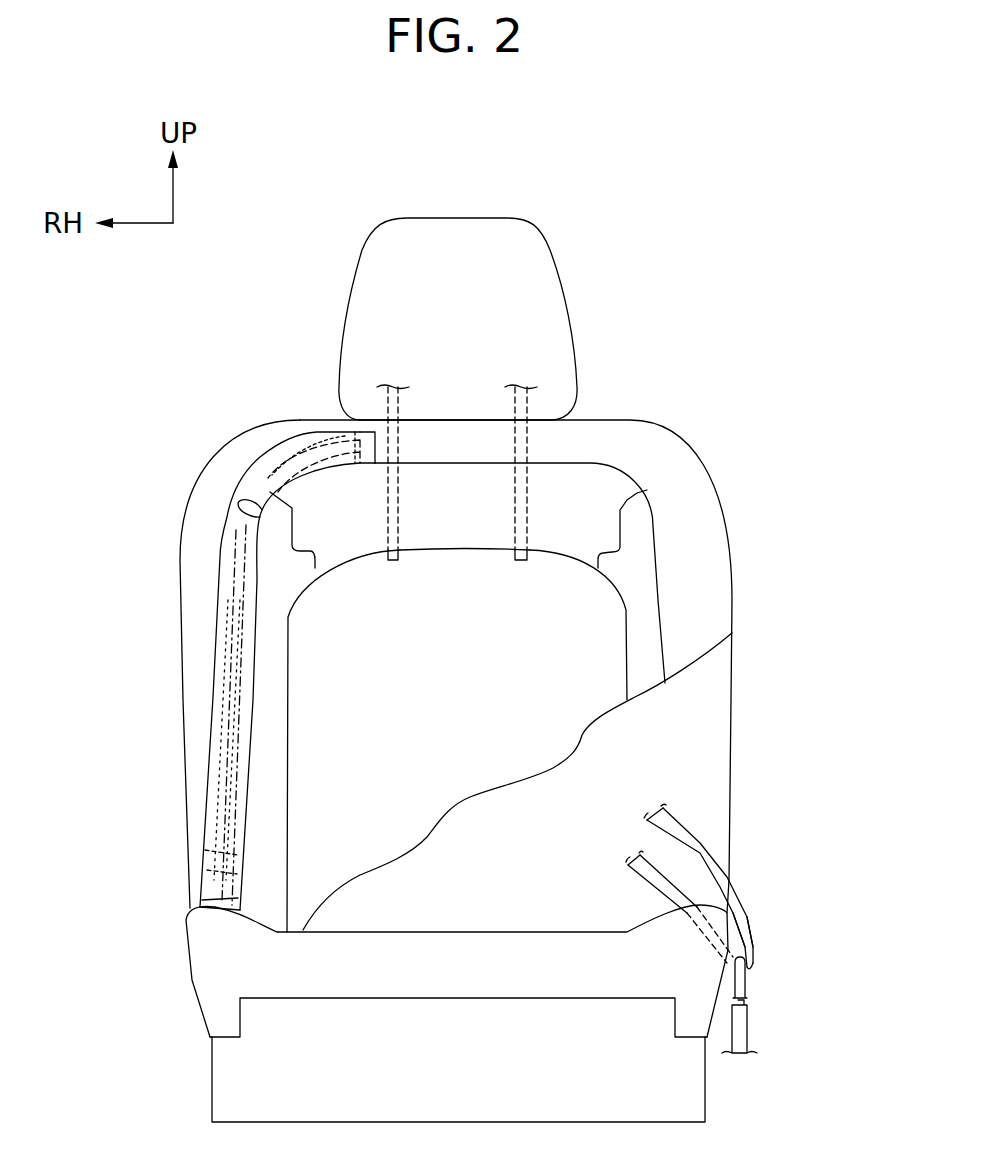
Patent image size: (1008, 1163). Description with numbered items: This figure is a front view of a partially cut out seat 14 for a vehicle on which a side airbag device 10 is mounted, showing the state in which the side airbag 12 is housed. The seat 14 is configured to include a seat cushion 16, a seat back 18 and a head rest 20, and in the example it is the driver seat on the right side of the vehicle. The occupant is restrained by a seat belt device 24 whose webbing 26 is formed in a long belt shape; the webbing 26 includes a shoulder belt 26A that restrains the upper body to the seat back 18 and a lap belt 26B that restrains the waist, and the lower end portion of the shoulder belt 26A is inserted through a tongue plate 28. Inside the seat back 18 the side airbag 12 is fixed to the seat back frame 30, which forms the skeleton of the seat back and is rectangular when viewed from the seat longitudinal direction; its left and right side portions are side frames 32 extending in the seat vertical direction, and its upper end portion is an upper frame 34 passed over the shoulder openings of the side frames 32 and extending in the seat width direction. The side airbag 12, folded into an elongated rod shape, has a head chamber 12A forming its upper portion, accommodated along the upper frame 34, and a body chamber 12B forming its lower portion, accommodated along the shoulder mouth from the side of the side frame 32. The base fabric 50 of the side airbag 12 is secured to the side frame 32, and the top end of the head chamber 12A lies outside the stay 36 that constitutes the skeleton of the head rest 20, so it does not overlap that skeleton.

The side airbag device 10 is at (153, 500).
The side airbag 12 is at (195, 781).
The head chamber 12A is at (243, 485).
The body chamber 12B is at (213, 697).
The seat for a vehicle 14 is at (188, 1005).
The seat cushion 16 is at (197, 933).
The seat back 18 is at (730, 728).
The head rest 20 is at (573, 300).
The seat belt device 24 is at (770, 1036).
The webbing 26 is at (712, 845).
The shoulder belt 26A is at (735, 905).
The lap belt 26B is at (650, 883).
The tongue plate 28 is at (747, 980).
The seat back frame 30 is at (660, 490).
The side frame 32 is at (647, 623).
The upper frame 34 is at (580, 490).
The stay 36 is at (398, 440).
The base fabric 50 is at (210, 863).